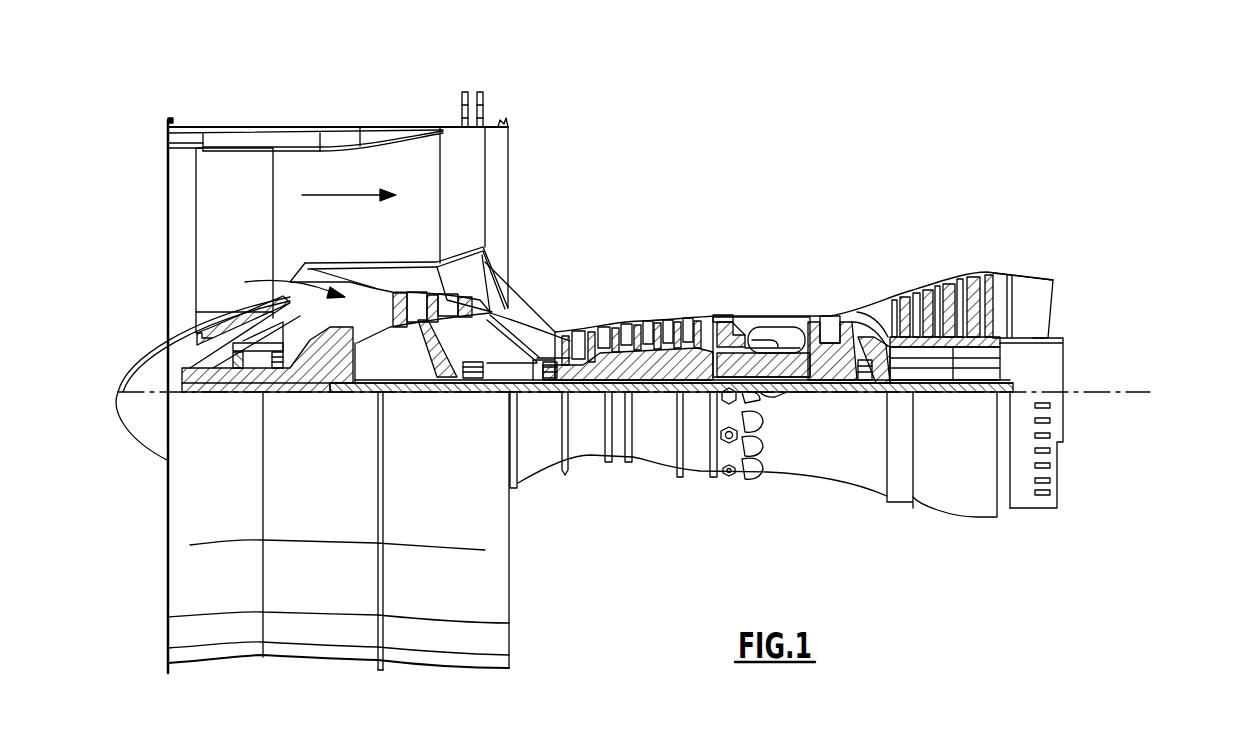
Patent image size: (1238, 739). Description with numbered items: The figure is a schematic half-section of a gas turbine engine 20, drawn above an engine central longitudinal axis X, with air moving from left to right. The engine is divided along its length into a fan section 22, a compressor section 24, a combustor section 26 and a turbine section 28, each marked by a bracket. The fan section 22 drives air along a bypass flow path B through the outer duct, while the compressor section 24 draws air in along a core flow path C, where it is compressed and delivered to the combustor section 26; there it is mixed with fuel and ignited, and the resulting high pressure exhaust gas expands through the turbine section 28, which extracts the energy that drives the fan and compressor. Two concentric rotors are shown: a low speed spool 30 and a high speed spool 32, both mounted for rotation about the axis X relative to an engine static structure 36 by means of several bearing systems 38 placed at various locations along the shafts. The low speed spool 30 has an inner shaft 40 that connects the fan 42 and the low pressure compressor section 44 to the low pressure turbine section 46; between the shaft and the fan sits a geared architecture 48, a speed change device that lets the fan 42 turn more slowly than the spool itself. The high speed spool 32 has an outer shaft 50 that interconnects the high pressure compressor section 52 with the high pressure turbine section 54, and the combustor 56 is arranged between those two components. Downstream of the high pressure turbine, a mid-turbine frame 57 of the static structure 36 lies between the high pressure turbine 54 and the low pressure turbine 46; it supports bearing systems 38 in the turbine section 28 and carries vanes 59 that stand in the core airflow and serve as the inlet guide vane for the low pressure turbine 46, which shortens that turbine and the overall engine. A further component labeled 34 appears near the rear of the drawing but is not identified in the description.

The gas turbine engine 20 is at (772, 173).
The fan section 22 is at (155, 97).
The compressor section 24 is at (375, 232).
The combustor section 26 is at (712, 232).
The turbine section 28 is at (812, 232).
The low speed spool 30 is at (657, 402).
The high speed spool 32 is at (698, 337).
The engine case structure 34 is at (953, 390).
The engine static structure 36 is at (697, 484).
The bearing systems 38 is at (240, 393).
The inner shaft 40 is at (535, 392).
The fan 42 is at (219, 246).
The low pressure compressor section 44 is at (447, 300).
The low pressure turbine section 46 is at (947, 280).
The geared architecture 48 is at (343, 375).
The outer shaft 50 is at (771, 390).
The high pressure compressor section 52 is at (628, 333).
The high pressure turbine section 54 is at (830, 313).
The combustor 56 is at (767, 337).
The mid-turbine frame 57 is at (872, 296).
The vanes 59 is at (897, 390).
The engine central longitudinal axis X is at (1142, 392).
The bypass flow path B is at (337, 195).
The core flow path C is at (285, 283).